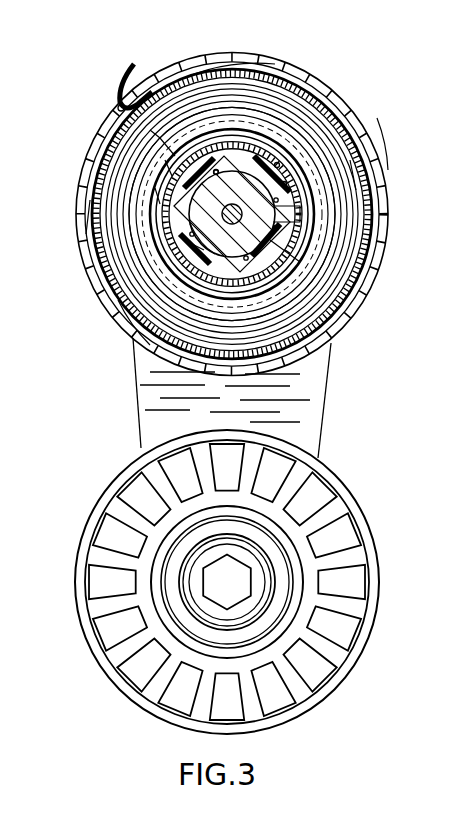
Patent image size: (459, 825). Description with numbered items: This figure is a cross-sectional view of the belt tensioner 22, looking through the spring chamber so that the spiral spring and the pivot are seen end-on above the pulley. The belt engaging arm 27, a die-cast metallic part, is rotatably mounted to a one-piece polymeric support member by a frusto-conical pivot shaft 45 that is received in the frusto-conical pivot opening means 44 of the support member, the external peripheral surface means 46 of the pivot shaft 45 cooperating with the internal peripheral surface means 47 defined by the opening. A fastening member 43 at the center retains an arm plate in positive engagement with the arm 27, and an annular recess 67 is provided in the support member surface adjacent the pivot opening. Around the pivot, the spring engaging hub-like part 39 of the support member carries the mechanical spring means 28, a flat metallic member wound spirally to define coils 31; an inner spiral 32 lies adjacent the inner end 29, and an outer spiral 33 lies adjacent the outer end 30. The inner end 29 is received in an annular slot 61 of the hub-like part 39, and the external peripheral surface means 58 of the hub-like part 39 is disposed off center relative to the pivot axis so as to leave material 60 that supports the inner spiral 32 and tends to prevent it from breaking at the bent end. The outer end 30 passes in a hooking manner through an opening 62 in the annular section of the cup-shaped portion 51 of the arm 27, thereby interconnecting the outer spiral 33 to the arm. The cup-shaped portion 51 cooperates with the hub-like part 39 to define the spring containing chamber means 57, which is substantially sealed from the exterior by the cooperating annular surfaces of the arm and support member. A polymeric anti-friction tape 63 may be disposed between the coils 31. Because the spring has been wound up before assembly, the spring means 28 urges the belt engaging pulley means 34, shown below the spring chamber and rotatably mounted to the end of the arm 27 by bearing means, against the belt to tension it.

The belt tensioner 22 is at (352, 74).
The belt engaging arm 27 is at (322, 388).
The mechanical spring means 28 is at (100, 220).
The inner end 29 is at (170, 168).
The outer end 30 is at (128, 72).
The coils 31 is at (333, 158).
The inner spiral 32 is at (160, 196).
The outer spiral 33 is at (168, 78).
The belt engaging pulley means 34 is at (360, 655).
The hub-like part 39 is at (273, 214).
The fastening member 43 is at (233, 206).
The pivot opening means 44 is at (196, 250).
The pivot shaft 45 is at (200, 238).
The external peripheral surface means 46 is at (285, 237).
The internal peripheral surface means 47 is at (276, 228).
The cup-shaped portion 51 is at (380, 160).
The spring containing chamber means 57 is at (140, 323).
The external peripheral surface means 58 is at (278, 164).
The material 60 is at (284, 184).
The annular slot 61 is at (150, 130).
The opening 62 is at (118, 108).
The anti-friction tape 63 is at (357, 188).
The annular recess 67 is at (216, 172).